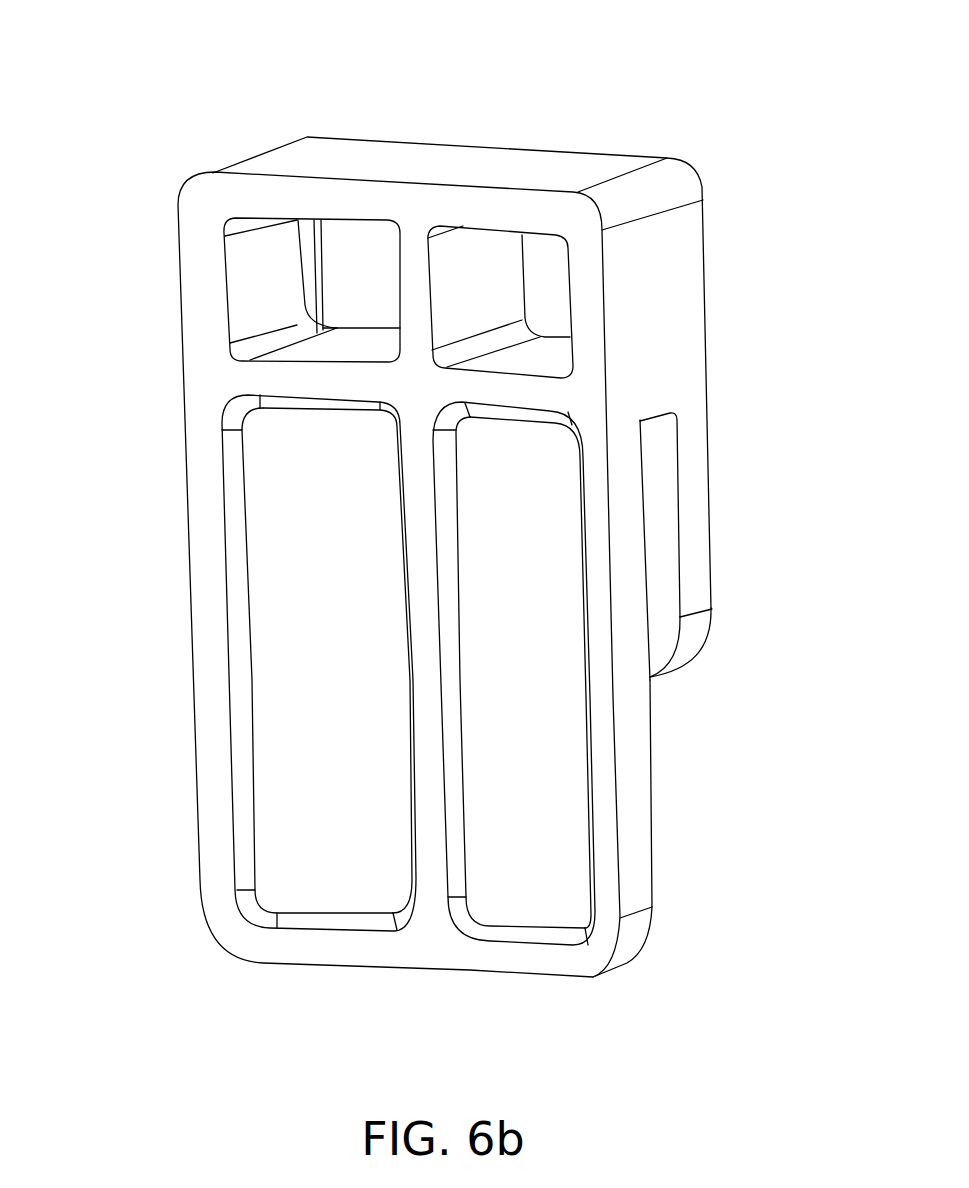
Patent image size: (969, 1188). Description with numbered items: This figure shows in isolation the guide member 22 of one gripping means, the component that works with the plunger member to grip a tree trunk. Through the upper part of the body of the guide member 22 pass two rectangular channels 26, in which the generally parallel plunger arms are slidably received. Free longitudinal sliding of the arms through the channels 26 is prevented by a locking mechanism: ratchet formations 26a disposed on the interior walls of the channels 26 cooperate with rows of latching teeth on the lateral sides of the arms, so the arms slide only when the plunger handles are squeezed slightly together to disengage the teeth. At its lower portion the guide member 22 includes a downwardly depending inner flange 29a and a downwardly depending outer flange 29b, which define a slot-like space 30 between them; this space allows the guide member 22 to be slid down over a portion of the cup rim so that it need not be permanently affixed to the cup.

The guide member 22 is at (160, 124).
The channels 26 is at (363, 235).
The ratchet formations 26a is at (305, 292).
The slot-like space 30 is at (658, 505).
The outer flange 29b is at (700, 597).
The inner flange 29a is at (638, 877).